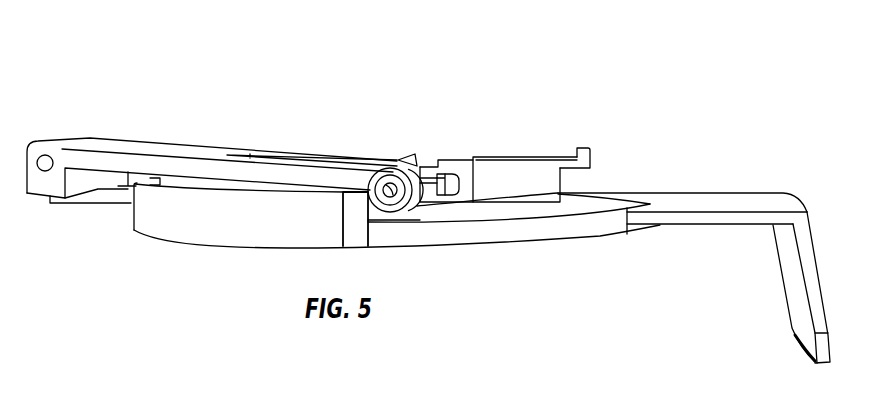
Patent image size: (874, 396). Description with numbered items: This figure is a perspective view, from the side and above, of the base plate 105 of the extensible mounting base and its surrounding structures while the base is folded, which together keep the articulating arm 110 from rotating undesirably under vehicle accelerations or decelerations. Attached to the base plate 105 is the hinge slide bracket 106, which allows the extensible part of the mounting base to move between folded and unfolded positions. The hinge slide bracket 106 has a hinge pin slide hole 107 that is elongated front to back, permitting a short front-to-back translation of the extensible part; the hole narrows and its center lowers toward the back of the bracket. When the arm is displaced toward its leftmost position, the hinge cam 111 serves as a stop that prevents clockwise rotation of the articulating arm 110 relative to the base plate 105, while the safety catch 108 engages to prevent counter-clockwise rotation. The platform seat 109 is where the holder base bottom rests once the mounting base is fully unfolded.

The base plate 105 is at (200, 229).
The hinge slide bracket 106 is at (513, 157).
The hinge pin slide hole 107 is at (446, 169).
The safety catch 108 is at (580, 143).
The platform seat 109 is at (810, 261).
The articulating arm 110 is at (203, 139).
The hinge cam 111 is at (391, 154).